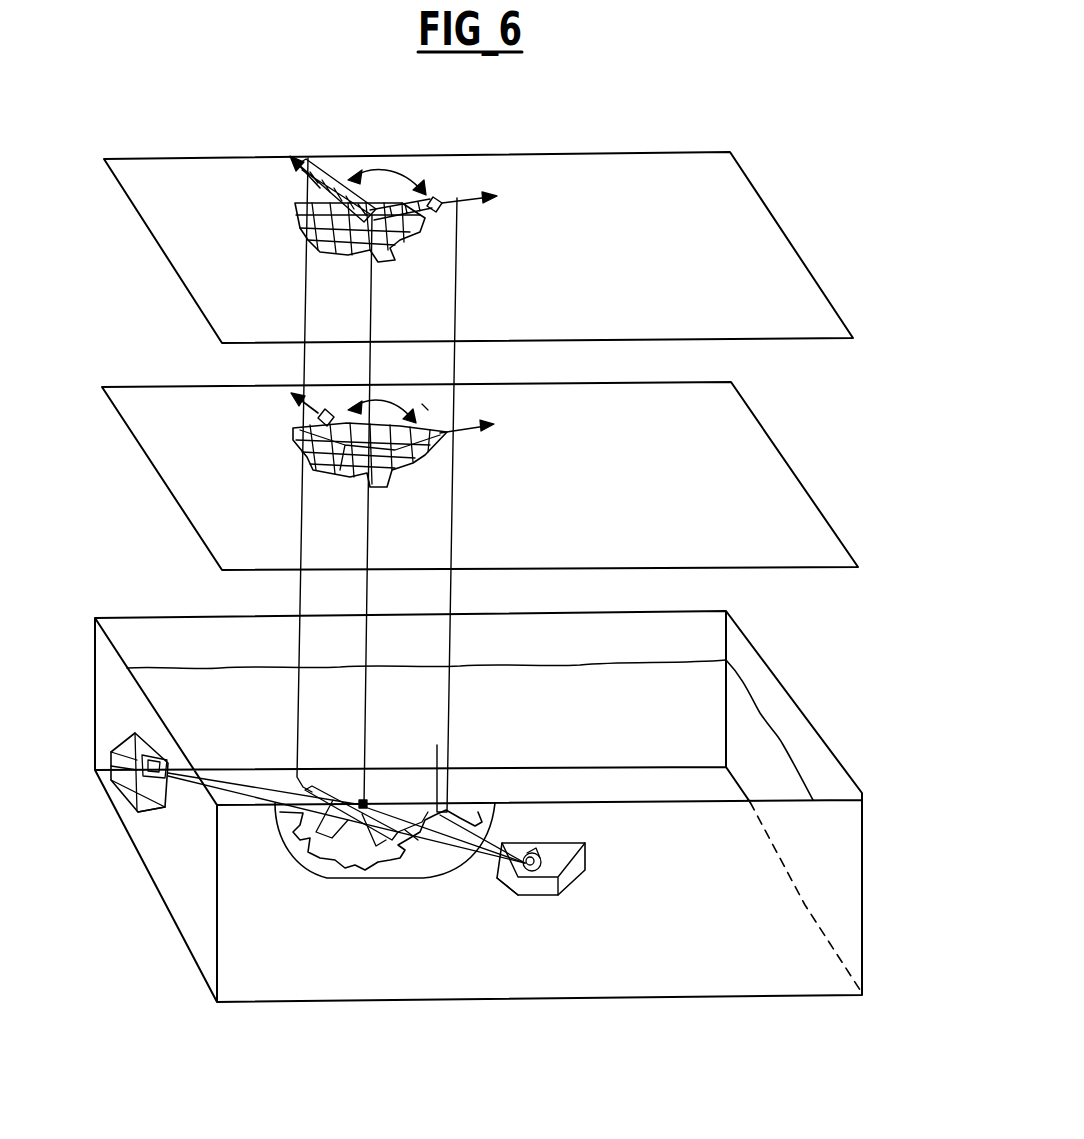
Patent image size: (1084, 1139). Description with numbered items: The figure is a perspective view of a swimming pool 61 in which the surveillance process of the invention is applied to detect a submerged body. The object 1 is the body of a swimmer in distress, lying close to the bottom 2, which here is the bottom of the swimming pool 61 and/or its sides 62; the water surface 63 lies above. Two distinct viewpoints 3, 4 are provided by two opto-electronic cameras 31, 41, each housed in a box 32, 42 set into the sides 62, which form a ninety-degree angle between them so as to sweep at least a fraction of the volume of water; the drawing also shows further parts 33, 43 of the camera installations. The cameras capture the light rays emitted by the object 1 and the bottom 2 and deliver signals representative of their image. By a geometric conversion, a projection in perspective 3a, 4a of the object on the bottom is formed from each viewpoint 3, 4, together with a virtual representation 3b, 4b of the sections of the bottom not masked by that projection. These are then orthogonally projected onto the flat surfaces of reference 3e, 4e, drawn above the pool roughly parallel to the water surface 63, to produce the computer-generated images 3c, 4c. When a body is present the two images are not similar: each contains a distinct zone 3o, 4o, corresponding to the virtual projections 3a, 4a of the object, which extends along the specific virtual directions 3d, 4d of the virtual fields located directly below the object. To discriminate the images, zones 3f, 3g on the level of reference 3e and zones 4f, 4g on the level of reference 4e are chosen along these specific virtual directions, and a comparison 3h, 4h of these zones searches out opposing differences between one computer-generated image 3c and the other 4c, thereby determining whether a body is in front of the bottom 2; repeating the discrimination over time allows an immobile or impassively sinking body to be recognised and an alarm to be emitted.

The object 1 is at (366, 800).
The bottom 2 is at (478, 834).
The viewpoint 3 is at (576, 861).
The projection in perspective 3a is at (300, 775).
The virtual representation 3b is at (378, 857).
The computer-generated image 3c is at (300, 212).
The specific virtual direction 3d is at (308, 158).
The surface of reference 3e is at (742, 193).
The zone 3f is at (338, 190).
The zone 3g is at (437, 197).
The comparison 3h is at (391, 172).
The distinct zone 3o is at (290, 191).
The viewpoint 4 is at (168, 774).
The projection in perspective 4a is at (437, 745).
The virtual representation 4b is at (381, 932).
The computer-generated image 4c is at (347, 468).
The specific virtual direction 4d is at (470, 197).
The surface of reference 4e is at (753, 457).
The zone 4f is at (328, 412).
The zone 4g is at (423, 405).
The comparison 4h is at (382, 402).
The distinct zone 4o is at (330, 457).
The opto-electronic camera 31 is at (518, 888).
The box 32 is at (585, 868).
The camera mount 33 is at (535, 890).
The opto-electronic camera 41 is at (165, 777).
The box 42 is at (150, 812).
The camera mount 43 is at (125, 797).
The swimming pool 61 is at (668, 1012).
The sides 62 is at (718, 970).
The surface of the water 63 is at (693, 688).